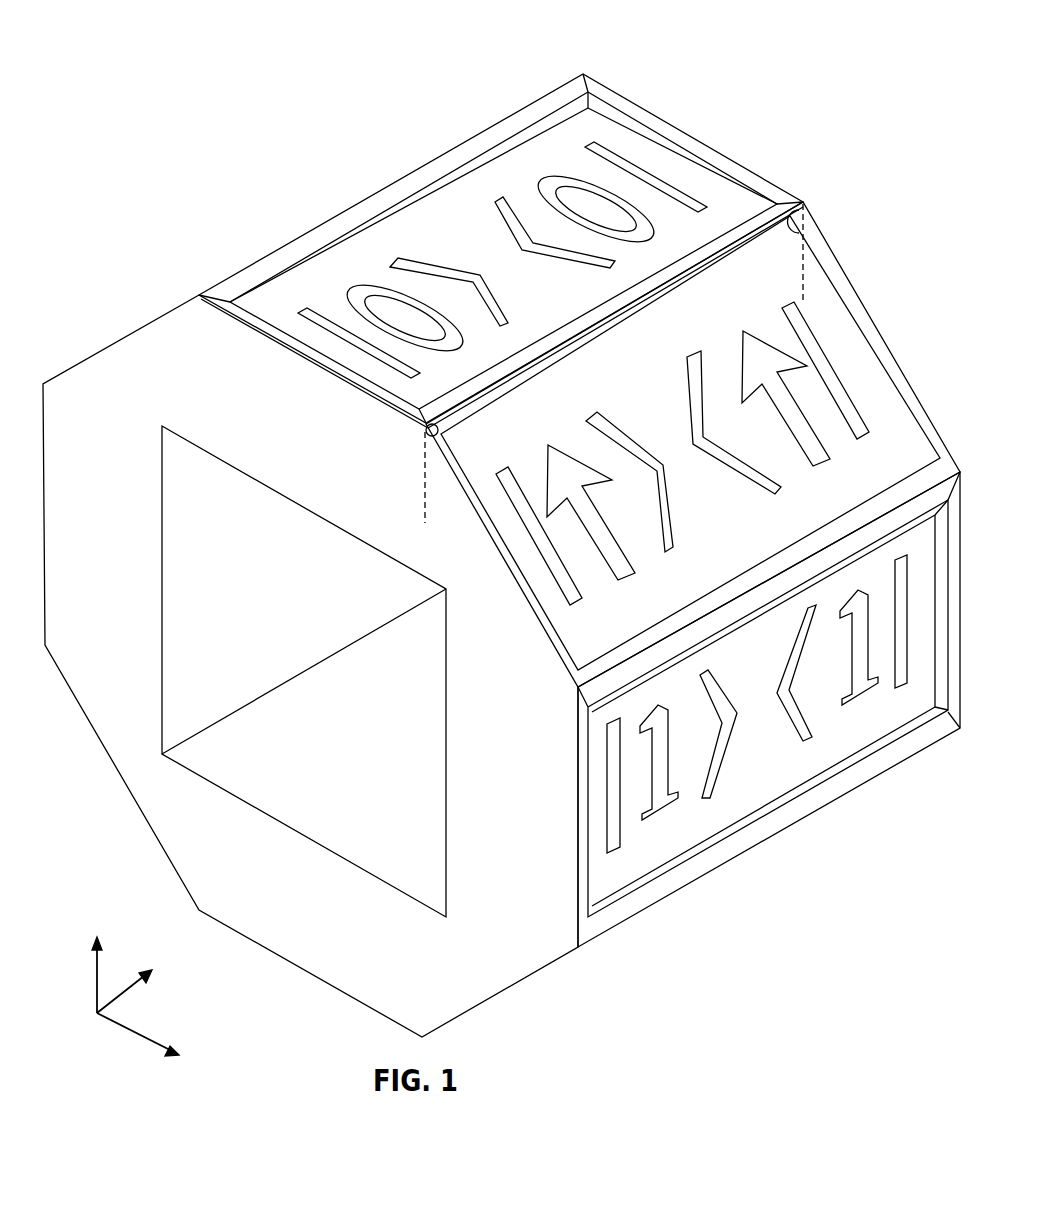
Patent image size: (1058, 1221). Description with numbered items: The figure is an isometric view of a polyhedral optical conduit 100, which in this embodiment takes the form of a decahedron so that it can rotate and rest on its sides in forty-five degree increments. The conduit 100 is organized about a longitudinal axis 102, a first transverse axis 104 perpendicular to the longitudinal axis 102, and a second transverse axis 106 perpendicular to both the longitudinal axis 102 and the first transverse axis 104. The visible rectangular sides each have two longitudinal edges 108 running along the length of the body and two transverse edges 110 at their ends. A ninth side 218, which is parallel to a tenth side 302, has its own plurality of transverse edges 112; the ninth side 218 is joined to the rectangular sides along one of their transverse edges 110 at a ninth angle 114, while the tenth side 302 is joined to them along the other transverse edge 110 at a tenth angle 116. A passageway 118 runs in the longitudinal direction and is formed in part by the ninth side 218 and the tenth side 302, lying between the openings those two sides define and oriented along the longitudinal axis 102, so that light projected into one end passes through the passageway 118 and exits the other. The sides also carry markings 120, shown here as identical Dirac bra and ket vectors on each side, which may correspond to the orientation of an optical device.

The polyhedral optical conduit 100 is at (266, 141).
The longitudinal axis 102 is at (147, 983).
The first transverse axis 104 is at (95, 959).
The second transverse axis 106 is at (165, 1044).
The longitudinal edges 108 is at (451, 148).
The transverse edges 110 is at (246, 323).
The transverse edges 112 is at (54, 379).
The ninth angle 114 is at (440, 445).
The tenth angle 116 is at (781, 238).
The passageway 118 is at (375, 775).
The markings 120 is at (329, 289).
The ninth side 218 is at (335, 454).
The tenth side 302 is at (882, 303).